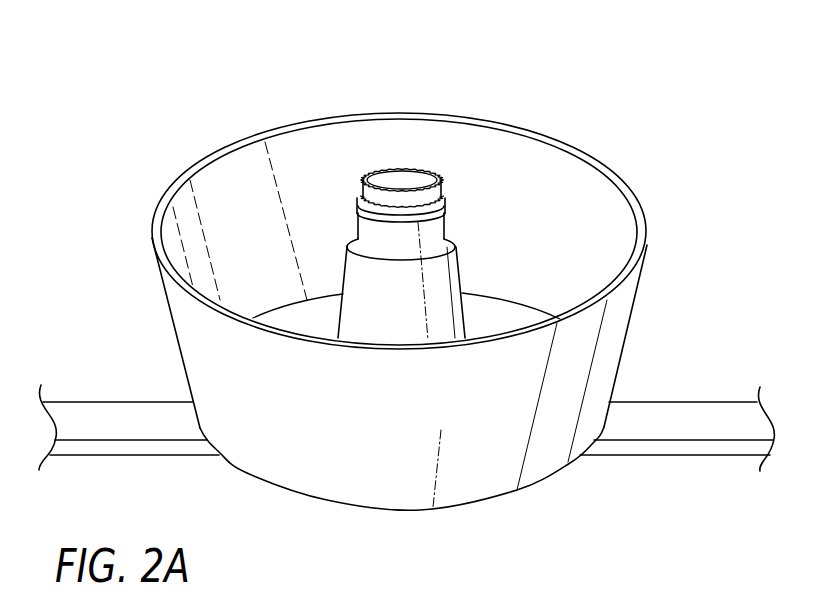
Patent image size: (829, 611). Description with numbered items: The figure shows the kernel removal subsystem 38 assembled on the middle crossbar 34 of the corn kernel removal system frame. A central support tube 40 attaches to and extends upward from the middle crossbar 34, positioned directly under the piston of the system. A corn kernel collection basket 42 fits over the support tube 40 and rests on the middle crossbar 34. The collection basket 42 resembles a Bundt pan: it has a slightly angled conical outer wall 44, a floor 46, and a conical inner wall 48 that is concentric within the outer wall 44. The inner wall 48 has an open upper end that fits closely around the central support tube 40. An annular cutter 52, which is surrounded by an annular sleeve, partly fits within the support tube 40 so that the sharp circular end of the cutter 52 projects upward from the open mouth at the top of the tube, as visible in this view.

The kernel removal subsystem 38 is at (722, 124).
The middle crossbar 34 is at (684, 425).
The outer wall 44 is at (207, 348).
The corn kernel collection basket 42 is at (479, 462).
The floor 46 is at (298, 322).
The inner wall 48 is at (440, 292).
The central support tube 40 is at (432, 233).
The annular cutter 52 is at (428, 169).